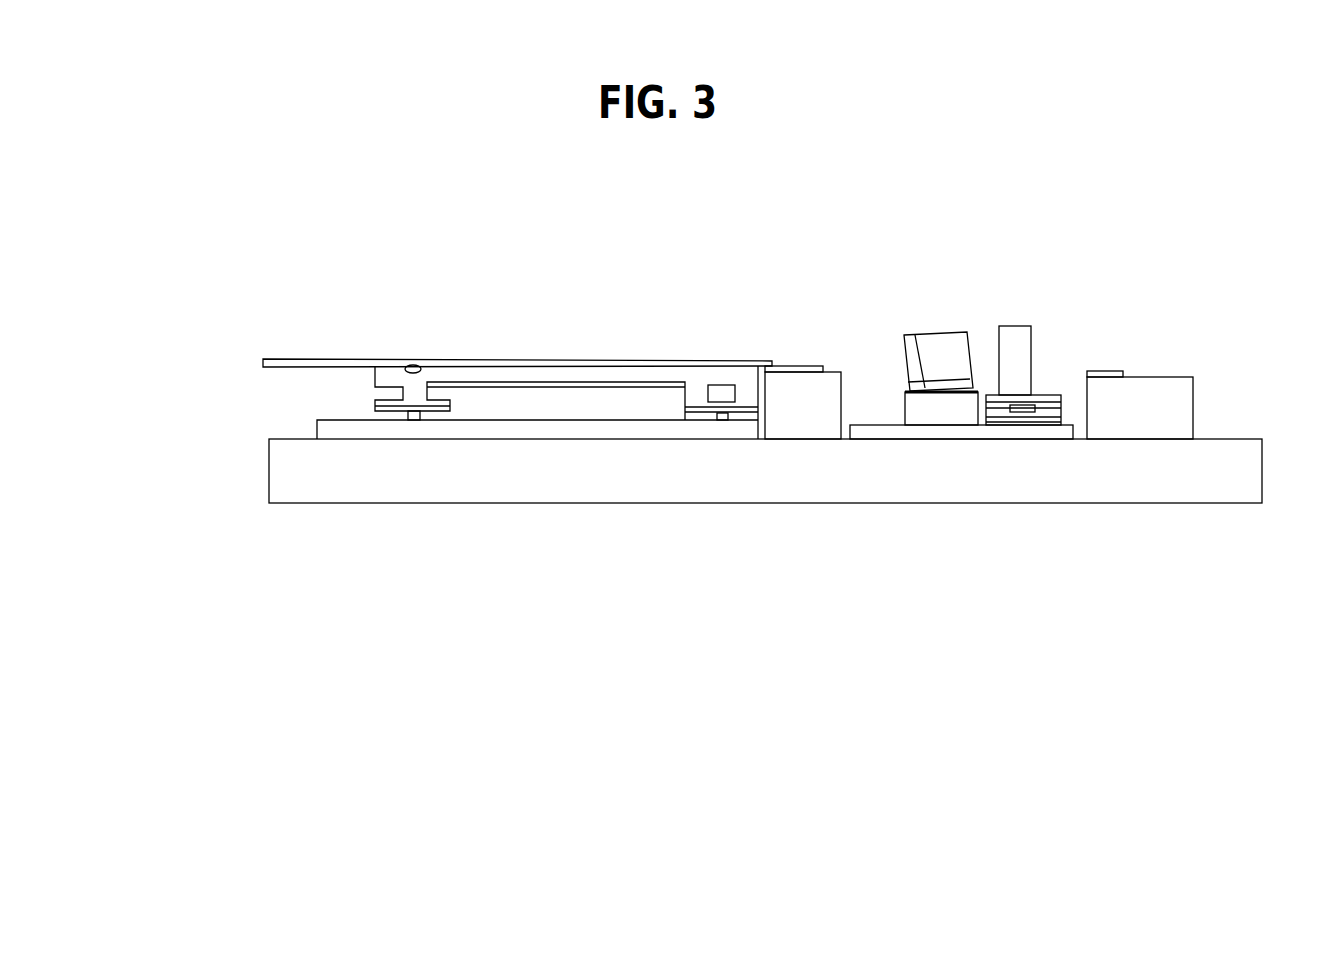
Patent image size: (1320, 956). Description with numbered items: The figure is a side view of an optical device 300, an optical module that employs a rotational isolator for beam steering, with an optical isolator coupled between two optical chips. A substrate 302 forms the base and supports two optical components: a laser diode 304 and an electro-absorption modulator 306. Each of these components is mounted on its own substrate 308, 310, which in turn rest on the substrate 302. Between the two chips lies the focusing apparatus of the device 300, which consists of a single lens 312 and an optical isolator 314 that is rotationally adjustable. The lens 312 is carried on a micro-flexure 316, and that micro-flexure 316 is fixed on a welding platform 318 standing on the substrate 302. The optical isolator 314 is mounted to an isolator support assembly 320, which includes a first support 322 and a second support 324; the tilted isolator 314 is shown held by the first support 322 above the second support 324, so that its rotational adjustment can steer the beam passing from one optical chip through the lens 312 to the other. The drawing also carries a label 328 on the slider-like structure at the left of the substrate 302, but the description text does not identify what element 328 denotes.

The optical device 300 is at (855, 238).
The substrate 302 is at (580, 475).
The laser diode 304 is at (1117, 371).
The electro-absorption modulator 306 is at (802, 366).
The substrate 308 is at (793, 429).
The substrate 310 is at (1173, 430).
The lens 312 is at (1021, 326).
The optical isolator 314 is at (953, 332).
The micro-flexure 316 is at (1038, 423).
The welding platform 318 is at (992, 435).
The isolator support assembly 320 is at (885, 430).
The first support 322 is at (917, 335).
The second support 324 is at (943, 413).
The slider assembly 328 is at (517, 399).